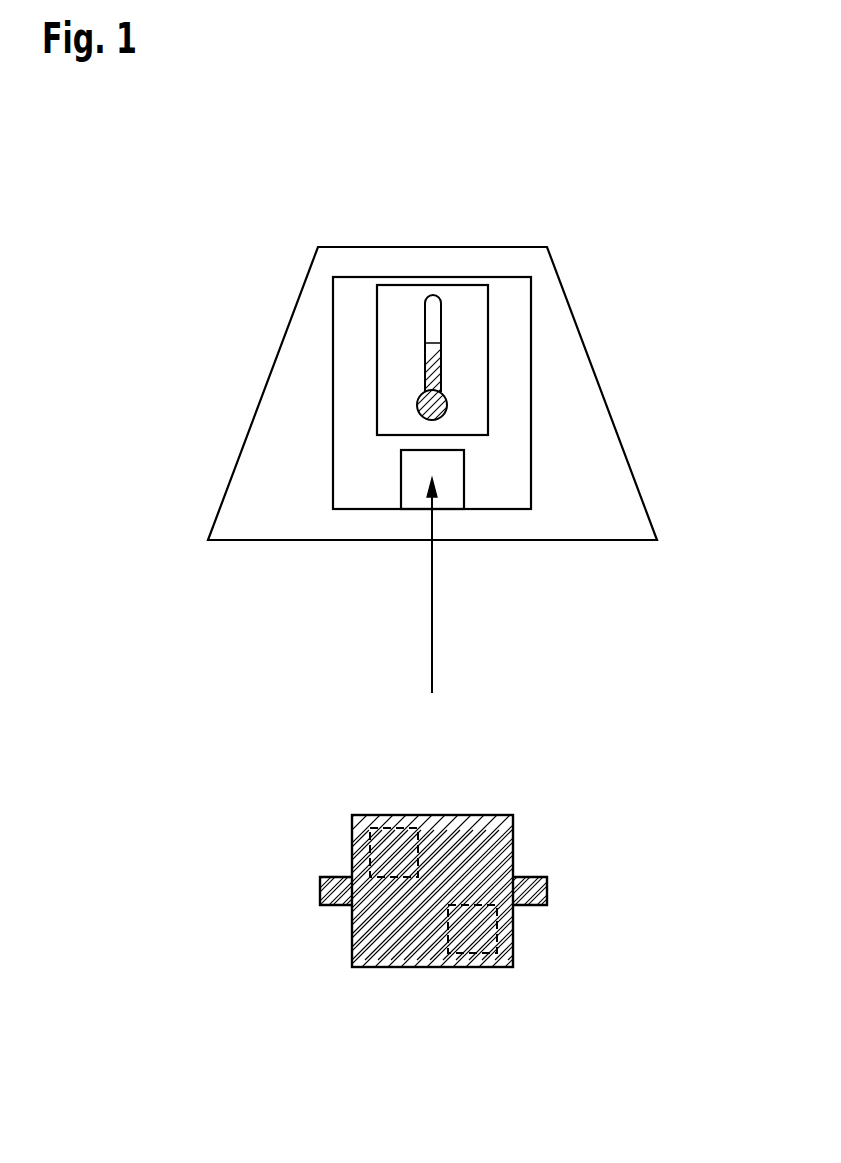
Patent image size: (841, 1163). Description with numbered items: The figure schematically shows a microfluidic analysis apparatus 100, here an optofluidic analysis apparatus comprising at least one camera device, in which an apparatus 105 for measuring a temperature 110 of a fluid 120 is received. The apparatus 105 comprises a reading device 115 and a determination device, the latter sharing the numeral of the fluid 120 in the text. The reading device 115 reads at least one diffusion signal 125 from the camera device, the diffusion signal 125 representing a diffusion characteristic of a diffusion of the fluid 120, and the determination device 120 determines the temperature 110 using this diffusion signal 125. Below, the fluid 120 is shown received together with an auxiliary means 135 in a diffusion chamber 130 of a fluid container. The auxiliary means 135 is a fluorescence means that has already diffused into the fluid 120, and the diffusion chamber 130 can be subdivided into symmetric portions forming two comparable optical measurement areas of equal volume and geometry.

The microfluidic analysis apparatus 100 is at (434, 262).
The apparatus for measuring a temperature 105 is at (512, 418).
The temperature 110 is at (438, 348).
The reading device 115 is at (450, 495).
The fluid 120 is at (468, 302).
The diffusion signal 125 is at (432, 638).
The diffusion chamber 130 is at (513, 935).
The auxiliary means 135 is at (408, 897).